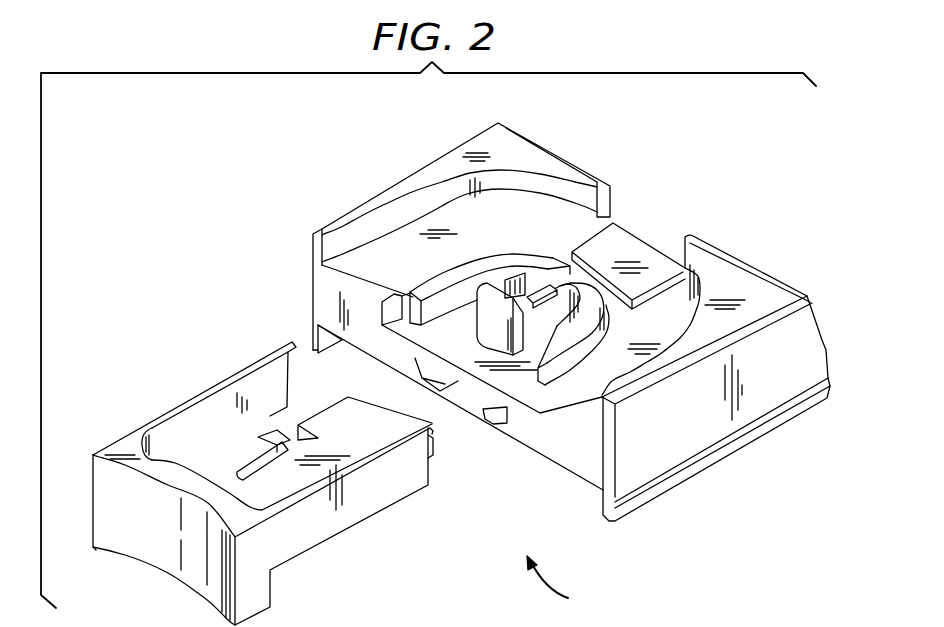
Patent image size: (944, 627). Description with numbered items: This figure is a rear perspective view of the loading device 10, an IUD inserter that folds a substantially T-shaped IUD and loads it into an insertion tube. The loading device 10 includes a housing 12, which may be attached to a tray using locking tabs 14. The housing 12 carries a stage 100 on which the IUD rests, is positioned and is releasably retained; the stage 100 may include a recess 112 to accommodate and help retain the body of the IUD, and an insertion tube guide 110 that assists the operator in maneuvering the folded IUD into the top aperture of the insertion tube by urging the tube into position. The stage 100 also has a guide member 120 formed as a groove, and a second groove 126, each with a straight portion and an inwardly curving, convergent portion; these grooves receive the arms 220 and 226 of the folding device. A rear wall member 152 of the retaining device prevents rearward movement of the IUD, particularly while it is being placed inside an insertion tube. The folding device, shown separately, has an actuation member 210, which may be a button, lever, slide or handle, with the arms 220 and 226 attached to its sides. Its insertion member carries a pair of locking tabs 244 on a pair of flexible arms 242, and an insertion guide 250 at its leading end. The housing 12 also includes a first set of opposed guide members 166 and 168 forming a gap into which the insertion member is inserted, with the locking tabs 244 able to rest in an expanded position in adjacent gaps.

The loading device 10 is at (560, 589).
The housing 12 is at (798, 338).
The locking tabs 14 is at (765, 425).
The stage 100 is at (513, 220).
The insertion tube guide 110 is at (647, 253).
The recess 112 is at (560, 287).
The guide member 120 is at (610, 300).
The second groove 126 is at (425, 283).
The rear wall member 152 is at (495, 290).
The guide member 166 is at (492, 425).
The guide member 168 is at (433, 390).
The actuation member 210 is at (183, 547).
The arm 220 is at (363, 503).
The arm 226 is at (203, 393).
The flexible arms 242 is at (243, 458).
The locking tabs 244 is at (275, 437).
The insertion guide 250 is at (428, 462).